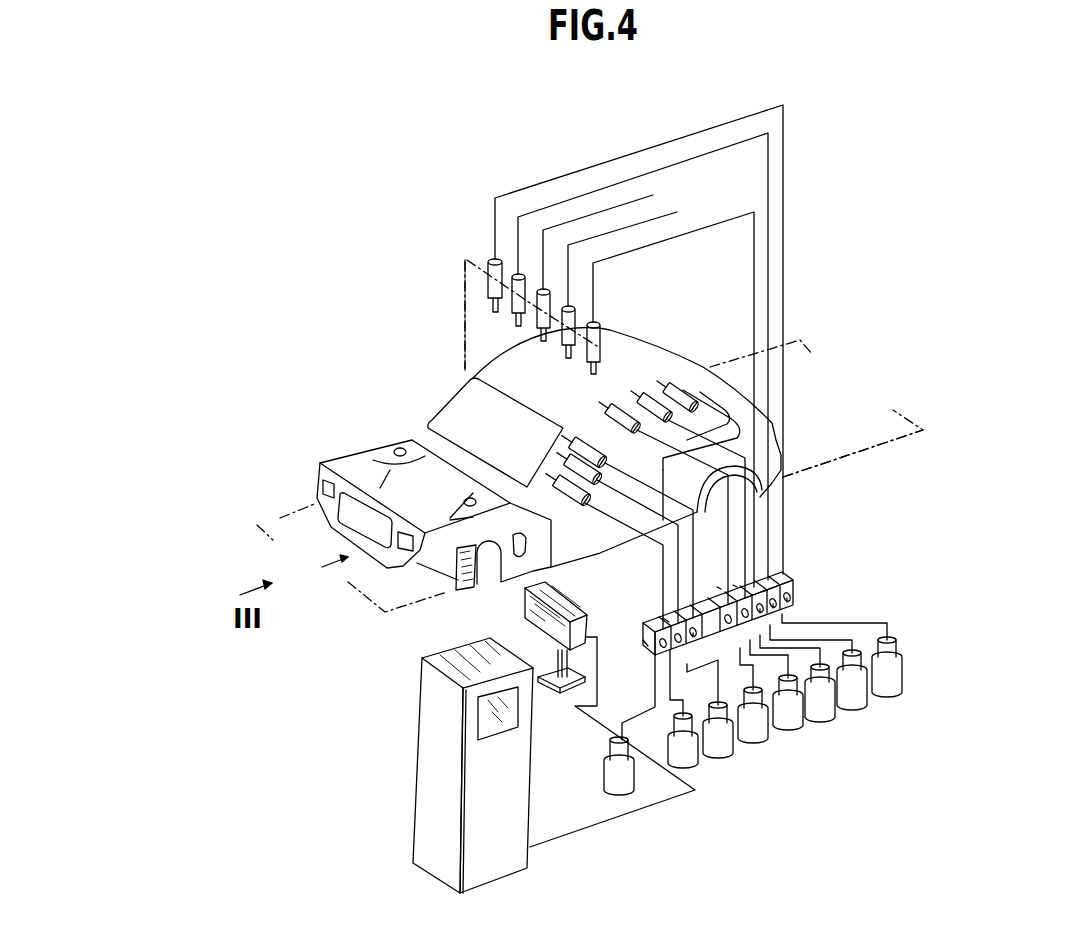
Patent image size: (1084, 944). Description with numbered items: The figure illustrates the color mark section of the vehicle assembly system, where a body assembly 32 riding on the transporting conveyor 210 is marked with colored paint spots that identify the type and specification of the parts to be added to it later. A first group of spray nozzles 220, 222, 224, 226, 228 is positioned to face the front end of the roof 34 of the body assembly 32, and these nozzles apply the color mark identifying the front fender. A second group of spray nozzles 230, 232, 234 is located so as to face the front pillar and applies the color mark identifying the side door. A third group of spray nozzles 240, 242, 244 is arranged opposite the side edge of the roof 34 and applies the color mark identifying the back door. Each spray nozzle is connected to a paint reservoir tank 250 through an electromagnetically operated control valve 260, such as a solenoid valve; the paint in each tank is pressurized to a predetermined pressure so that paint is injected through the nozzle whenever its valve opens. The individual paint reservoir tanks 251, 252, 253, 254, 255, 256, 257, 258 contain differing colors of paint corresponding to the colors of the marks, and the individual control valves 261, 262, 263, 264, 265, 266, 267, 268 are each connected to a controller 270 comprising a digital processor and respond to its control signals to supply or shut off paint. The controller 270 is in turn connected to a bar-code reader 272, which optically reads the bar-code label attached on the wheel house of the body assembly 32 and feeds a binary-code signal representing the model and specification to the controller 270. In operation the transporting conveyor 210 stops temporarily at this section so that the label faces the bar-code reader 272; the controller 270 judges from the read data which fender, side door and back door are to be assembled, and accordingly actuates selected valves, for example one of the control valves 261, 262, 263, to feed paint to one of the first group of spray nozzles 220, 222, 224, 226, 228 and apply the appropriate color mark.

The body assembly 32 is at (431, 391).
The roof 34 is at (502, 362).
The transporting conveyor 210 is at (855, 431).
The spray nozzle 220 is at (490, 268).
The spray nozzle 222 is at (514, 272).
The spray nozzle 224 is at (552, 292).
The spray nozzle 226 is at (578, 310).
The spray nozzle 228 is at (603, 345).
The spray nozzle 230 is at (575, 447).
The spray nozzle 232 is at (565, 462).
The spray nozzle 234 is at (566, 496).
The spray nozzle 240 is at (690, 400).
The spray nozzle 242 is at (630, 408).
The spray nozzle 244 is at (605, 418).
The paint reservoir tank 250 is at (755, 745).
The paint reservoir tank 251 is at (895, 688).
The paint reservoir tank 252 is at (855, 705).
The paint reservoir tank 253 is at (820, 720).
The paint reservoir tank 254 is at (607, 793).
The paint reservoir tank 255 is at (685, 757).
The paint reservoir tank 256 is at (720, 755).
The paint reservoir tank 257 is at (788, 720).
The paint reservoir tank 258 is at (760, 740).
The control valve 260 is at (800, 565).
The control valve 261 is at (795, 595).
The control valve 262 is at (790, 612).
The control valve 263 is at (778, 620).
The control valve 264 is at (692, 641).
The control valve 265 is at (670, 620).
The control valve 266 is at (650, 645).
The control valve 267 is at (735, 586).
The control valve 268 is at (719, 588).
The controller 270 is at (430, 816).
The bar-code reader 272 is at (523, 620).